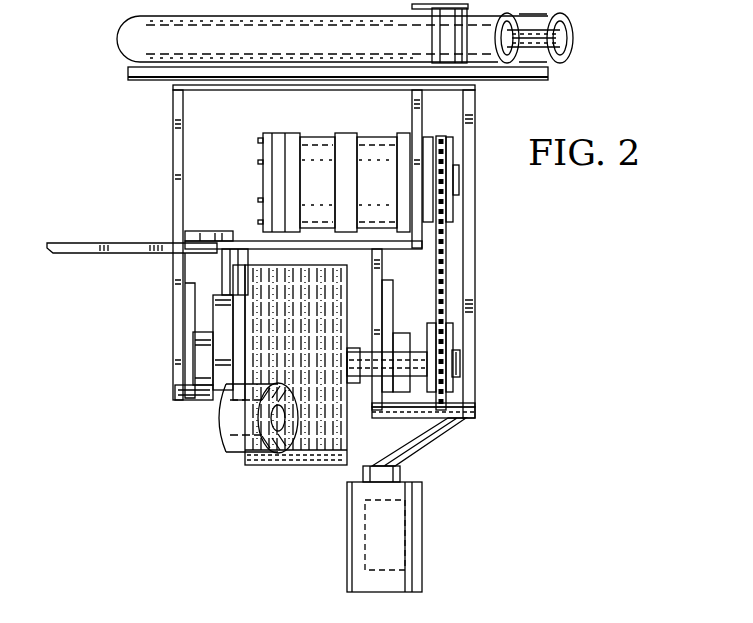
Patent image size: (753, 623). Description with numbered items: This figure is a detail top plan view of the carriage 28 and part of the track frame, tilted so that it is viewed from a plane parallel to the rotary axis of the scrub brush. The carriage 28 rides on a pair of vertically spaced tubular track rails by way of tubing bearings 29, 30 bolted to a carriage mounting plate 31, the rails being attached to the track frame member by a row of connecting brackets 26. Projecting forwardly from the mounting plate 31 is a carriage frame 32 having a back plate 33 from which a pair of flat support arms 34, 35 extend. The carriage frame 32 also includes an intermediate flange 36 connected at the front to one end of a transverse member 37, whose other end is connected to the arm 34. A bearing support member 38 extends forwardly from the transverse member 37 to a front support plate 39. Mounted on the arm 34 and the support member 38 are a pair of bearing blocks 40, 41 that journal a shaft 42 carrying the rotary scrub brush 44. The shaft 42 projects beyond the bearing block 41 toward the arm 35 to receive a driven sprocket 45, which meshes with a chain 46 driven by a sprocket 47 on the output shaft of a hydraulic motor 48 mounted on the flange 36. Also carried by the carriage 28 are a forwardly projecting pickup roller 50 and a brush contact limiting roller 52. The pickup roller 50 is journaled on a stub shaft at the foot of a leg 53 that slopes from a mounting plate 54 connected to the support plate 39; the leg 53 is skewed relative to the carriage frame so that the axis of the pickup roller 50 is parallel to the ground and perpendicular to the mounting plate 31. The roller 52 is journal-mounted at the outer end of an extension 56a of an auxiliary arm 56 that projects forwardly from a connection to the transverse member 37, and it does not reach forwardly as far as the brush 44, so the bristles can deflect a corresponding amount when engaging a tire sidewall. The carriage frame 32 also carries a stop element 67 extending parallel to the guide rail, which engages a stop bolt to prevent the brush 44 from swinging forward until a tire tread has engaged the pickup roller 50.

The connecting bracket 26 is at (530, 58).
The carriage 28 is at (124, 376).
The tubing bearing 29 is at (118, 30).
The tubing bearing 30 is at (574, 20).
The carriage mounting plate 31 is at (138, 80).
The carriage frame 32 is at (156, 149).
The back plate 33 is at (241, 90).
The support arm 34 is at (178, 290).
The support arm 35 is at (475, 264).
The intermediate flange 36 is at (410, 115).
The transverse member 37 is at (258, 241).
The bearing support member 38 is at (399, 329).
The front support plate 39 is at (475, 418).
The bearing block 40 is at (190, 398).
The bearing block 41 is at (387, 336).
The shaft 42 is at (459, 370).
The rotary scrub brush 44 is at (285, 466).
The driven sprocket 45 is at (450, 342).
The chain 46 is at (446, 242).
The sprocket 47 is at (450, 213).
The hydraulic motor 48 is at (318, 137).
The pickup roller 50 is at (422, 530).
The brush contact limiting roller 52 is at (228, 440).
The leg 53 is at (418, 448).
The mounting plate 54 is at (458, 420).
The auxiliary arm 56 is at (221, 260).
The auxiliary arm extension 56a is at (228, 320).
The stop element 67 is at (116, 243).